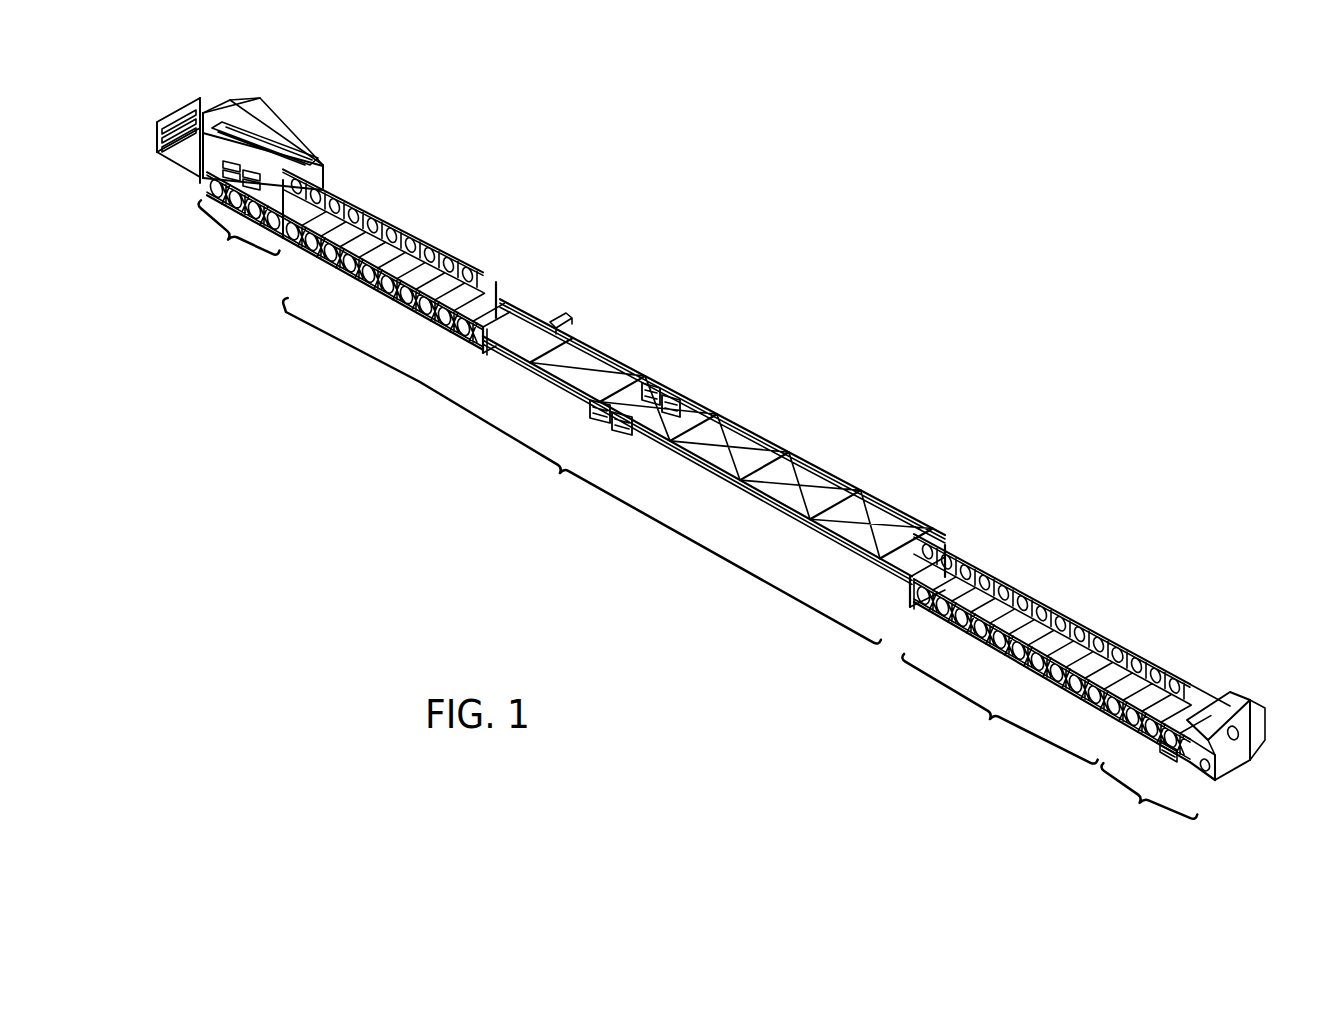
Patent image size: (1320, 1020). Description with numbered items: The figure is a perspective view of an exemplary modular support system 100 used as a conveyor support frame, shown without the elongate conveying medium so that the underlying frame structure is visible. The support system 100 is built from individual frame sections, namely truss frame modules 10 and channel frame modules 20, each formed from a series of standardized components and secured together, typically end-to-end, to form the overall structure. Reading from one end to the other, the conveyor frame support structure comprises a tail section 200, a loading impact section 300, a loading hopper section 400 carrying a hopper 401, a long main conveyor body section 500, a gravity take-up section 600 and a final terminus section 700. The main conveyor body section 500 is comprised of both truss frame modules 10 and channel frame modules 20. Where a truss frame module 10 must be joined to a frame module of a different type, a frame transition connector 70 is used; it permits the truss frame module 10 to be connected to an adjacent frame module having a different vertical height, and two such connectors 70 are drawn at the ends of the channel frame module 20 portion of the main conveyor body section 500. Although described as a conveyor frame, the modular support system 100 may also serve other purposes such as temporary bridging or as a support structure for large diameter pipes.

The truss frame module 10 is at (488, 190).
The channel frame module 20 is at (791, 417).
The frame transition connector 70 is at (485, 346).
The modular support system 100 is at (799, 272).
The tail section 200 is at (175, 163).
The loading impact section 300 is at (237, 228).
The loading hopper section 400 is at (324, 168).
The hopper 401 is at (262, 102).
The main conveyor body section 500 is at (614, 406).
The gravity take-up section 600 is at (1056, 649).
The final terminus section 700 is at (1182, 766).